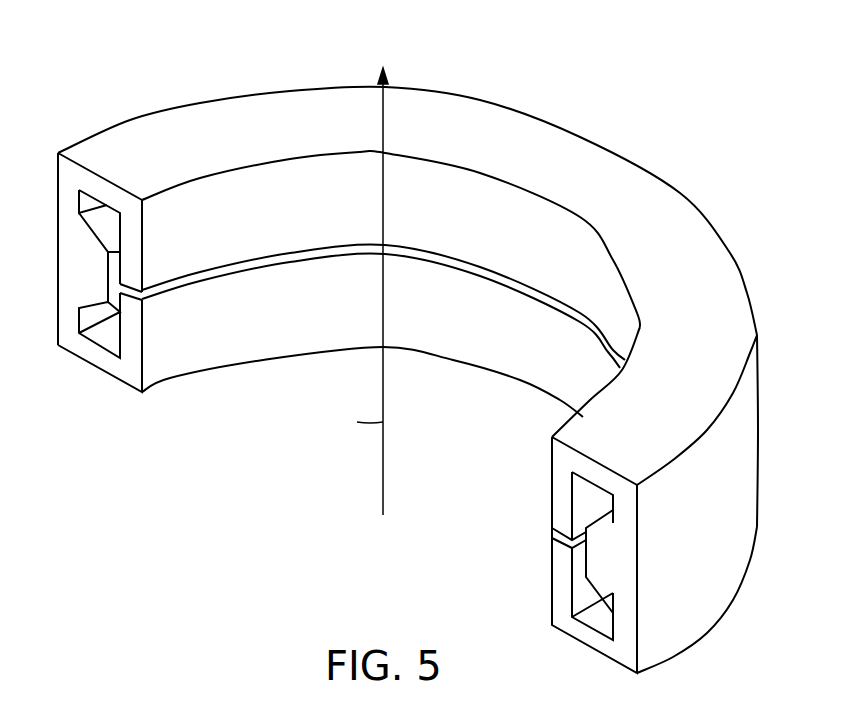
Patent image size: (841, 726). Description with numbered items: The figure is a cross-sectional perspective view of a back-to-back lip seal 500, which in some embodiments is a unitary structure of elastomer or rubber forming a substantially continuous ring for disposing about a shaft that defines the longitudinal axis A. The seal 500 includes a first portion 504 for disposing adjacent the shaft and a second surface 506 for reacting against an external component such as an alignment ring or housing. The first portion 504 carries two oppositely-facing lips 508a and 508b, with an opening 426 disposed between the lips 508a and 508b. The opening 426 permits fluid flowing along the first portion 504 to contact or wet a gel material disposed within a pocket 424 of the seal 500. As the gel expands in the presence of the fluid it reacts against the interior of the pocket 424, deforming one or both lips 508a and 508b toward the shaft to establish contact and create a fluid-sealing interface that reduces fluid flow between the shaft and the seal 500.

The back-to-back lip seal 500 is at (406, 359).
The first portion 504 is at (537, 372).
The second surface 506 is at (723, 583).
The lip 508a is at (132, 237).
The lip 508b is at (132, 357).
The pocket 424 is at (108, 330).
The opening 426 is at (142, 295).